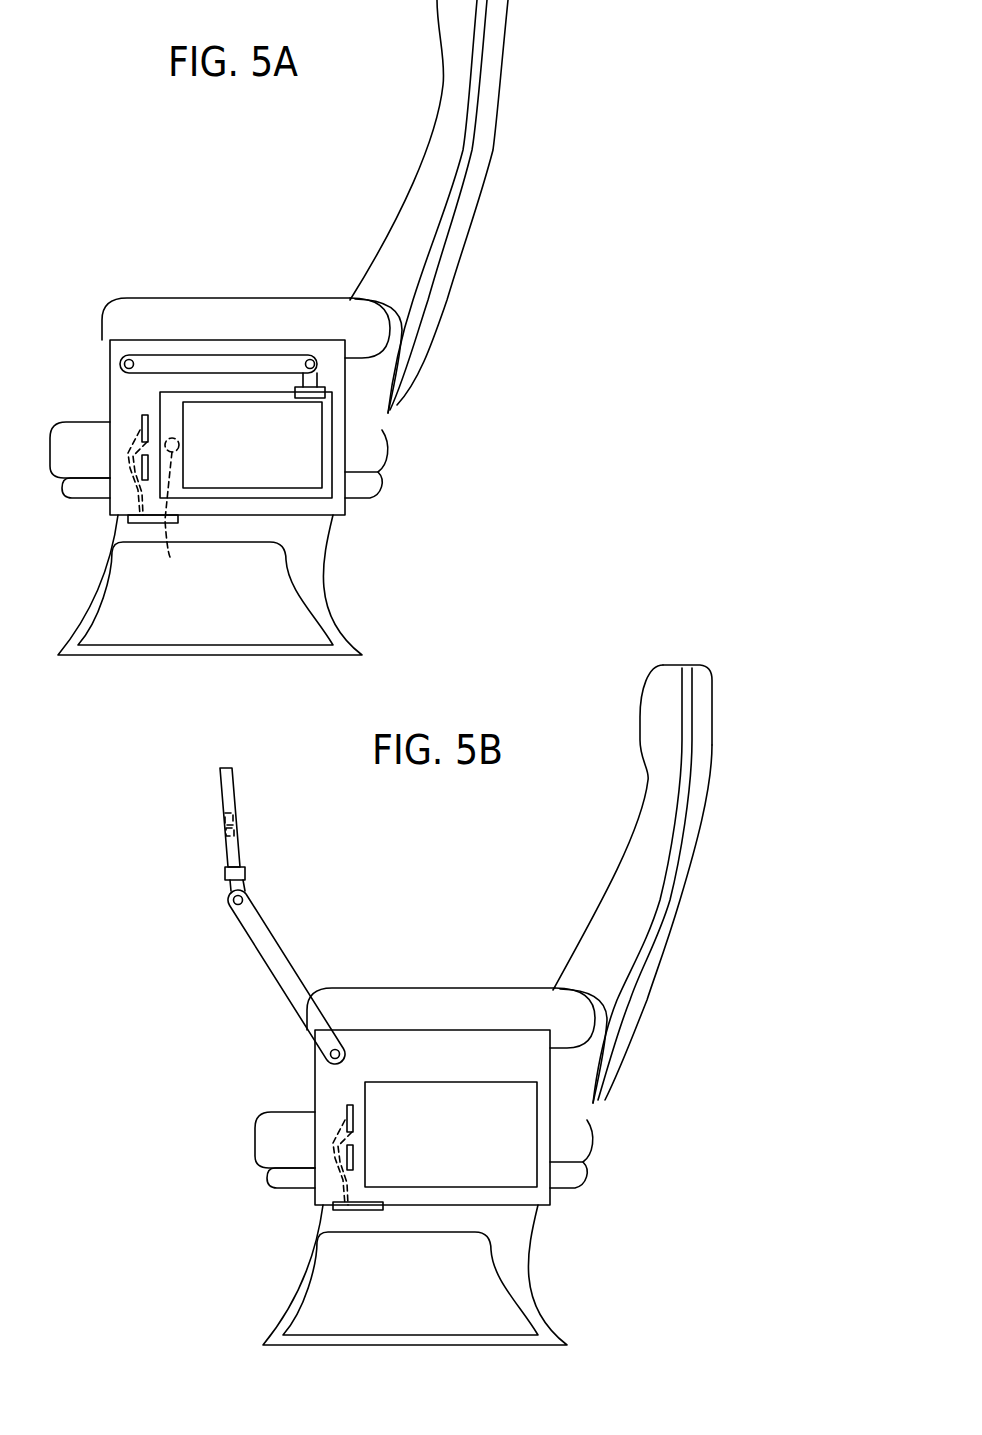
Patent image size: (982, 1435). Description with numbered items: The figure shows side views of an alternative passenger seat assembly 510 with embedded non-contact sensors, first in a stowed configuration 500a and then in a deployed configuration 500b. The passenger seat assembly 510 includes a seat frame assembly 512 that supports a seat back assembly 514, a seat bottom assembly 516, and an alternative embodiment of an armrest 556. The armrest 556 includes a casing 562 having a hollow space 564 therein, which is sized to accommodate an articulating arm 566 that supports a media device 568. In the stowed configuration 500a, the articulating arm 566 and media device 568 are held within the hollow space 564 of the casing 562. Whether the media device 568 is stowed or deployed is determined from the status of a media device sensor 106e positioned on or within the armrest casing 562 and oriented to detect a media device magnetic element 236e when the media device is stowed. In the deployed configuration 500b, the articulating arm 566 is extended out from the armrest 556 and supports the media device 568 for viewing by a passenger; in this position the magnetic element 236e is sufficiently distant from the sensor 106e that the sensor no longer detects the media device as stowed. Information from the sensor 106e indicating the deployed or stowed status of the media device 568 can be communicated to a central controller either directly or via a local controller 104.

In FIG. 5A, the stowed configuration 500a is at (554, 67).
In FIG. 5B, the deployed configuration 500b is at (744, 624).
In FIG. 5A, the passenger seat assembly 510 is at (435, 420).
In FIG. 5B, the passenger seat assembly 510 is at (641, 1111).
In FIG. 5A, the seat frame assembly 512 is at (357, 603).
In FIG. 5B, the seat frame assembly 512 is at (558, 1298).
In FIG. 5A, the seat back assembly 514 is at (438, 360).
In FIG. 5A, the seat bottom assembly 516 is at (395, 506).
In FIG. 5A, the armrest 556 is at (281, 278).
In FIG. 5B, the armrest 556 is at (456, 968).
In FIG. 5B, the casing 562 is at (482, 1200).
In FIG. 5B, the hollow space 564 is at (522, 1152).
In FIG. 5A, the articulating arm 566 is at (155, 367).
In FIG. 5B, the articulating arm 566 is at (282, 945).
In FIG. 5A, the media device 568 is at (262, 453).
In FIG. 5B, the media device 568 is at (235, 787).
In FIG. 5A, the local controller 104 is at (120, 517).
In FIG. 5B, the local controller 104 is at (323, 1207).
In FIG. 5A, the media device sensor 106e is at (142, 418).
In FIG. 5B, the media device sensor 106e is at (347, 1108).
In FIG. 5A, the magnetic element 236e is at (170, 557).
In FIG. 5B, the magnetic element 236e is at (238, 822).